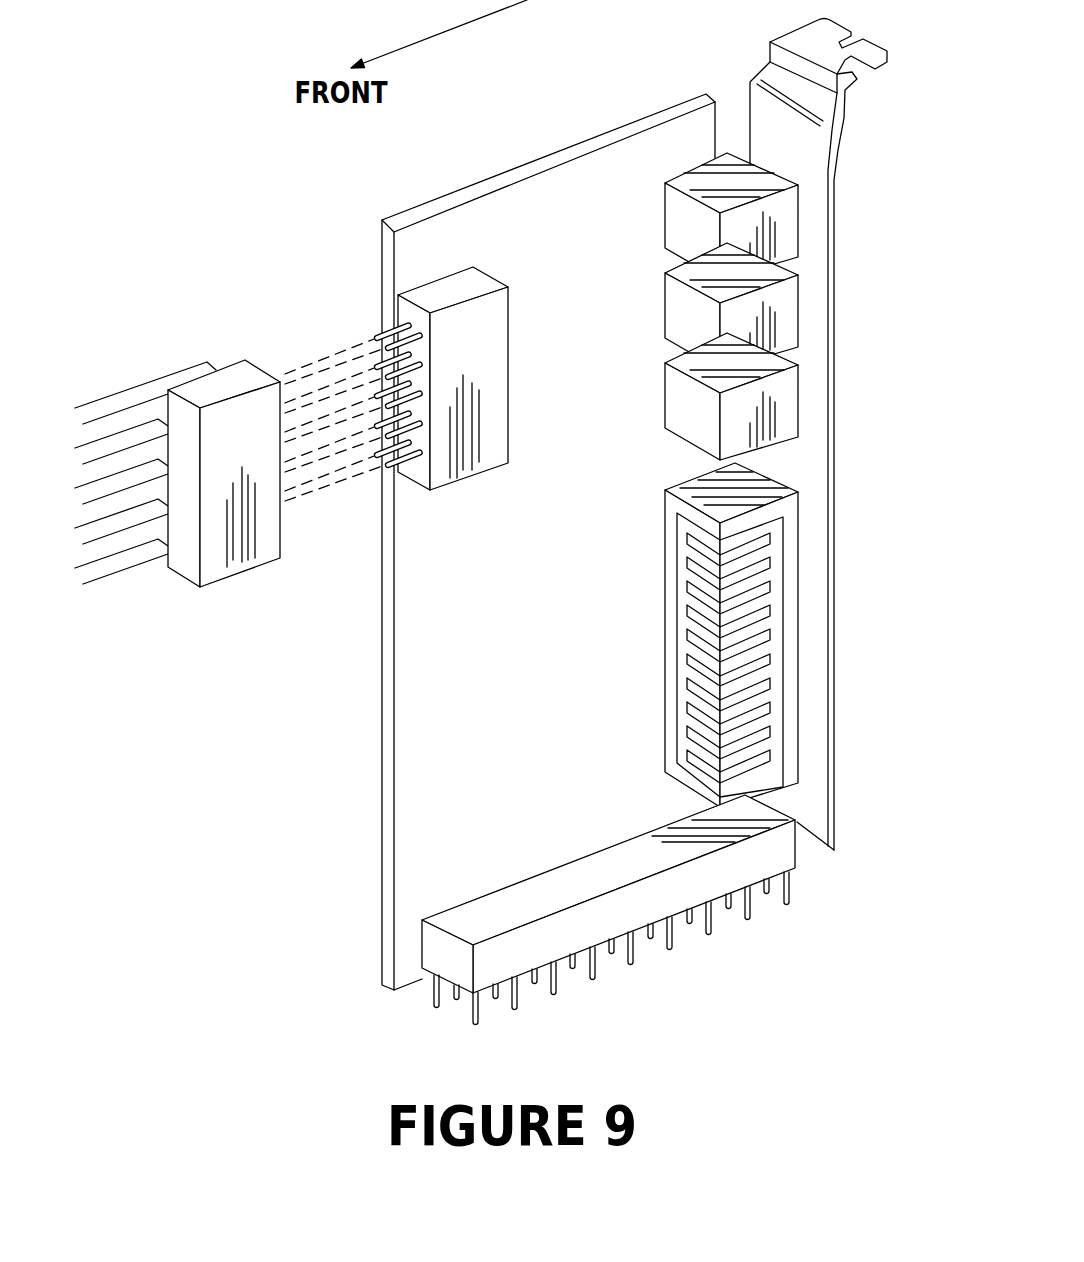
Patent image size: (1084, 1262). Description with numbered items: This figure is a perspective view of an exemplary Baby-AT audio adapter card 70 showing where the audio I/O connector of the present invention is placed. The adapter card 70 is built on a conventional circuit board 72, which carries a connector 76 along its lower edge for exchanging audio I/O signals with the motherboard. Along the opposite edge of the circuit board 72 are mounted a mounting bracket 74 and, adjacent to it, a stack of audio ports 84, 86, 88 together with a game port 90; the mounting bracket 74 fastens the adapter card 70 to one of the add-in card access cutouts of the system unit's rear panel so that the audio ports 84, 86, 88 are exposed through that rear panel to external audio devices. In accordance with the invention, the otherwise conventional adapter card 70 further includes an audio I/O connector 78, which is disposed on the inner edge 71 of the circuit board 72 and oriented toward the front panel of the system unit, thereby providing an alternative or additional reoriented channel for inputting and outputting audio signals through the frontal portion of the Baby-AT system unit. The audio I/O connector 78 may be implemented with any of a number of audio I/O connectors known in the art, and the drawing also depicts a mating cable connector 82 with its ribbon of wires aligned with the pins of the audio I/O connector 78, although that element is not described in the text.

The Baby-AT audio adapter card 70 is at (553, 147).
The inner edge 71 is at (376, 658).
The circuit board 72 is at (435, 719).
The mounting bracket 74 is at (813, 543).
The connector 76 is at (541, 887).
The audio I/O connector 78 is at (467, 473).
The cable connector 82 is at (237, 572).
The audio port 84 is at (680, 225).
The audio port 86 is at (680, 318).
The audio port 88 is at (677, 410).
The game port 90 is at (692, 609).